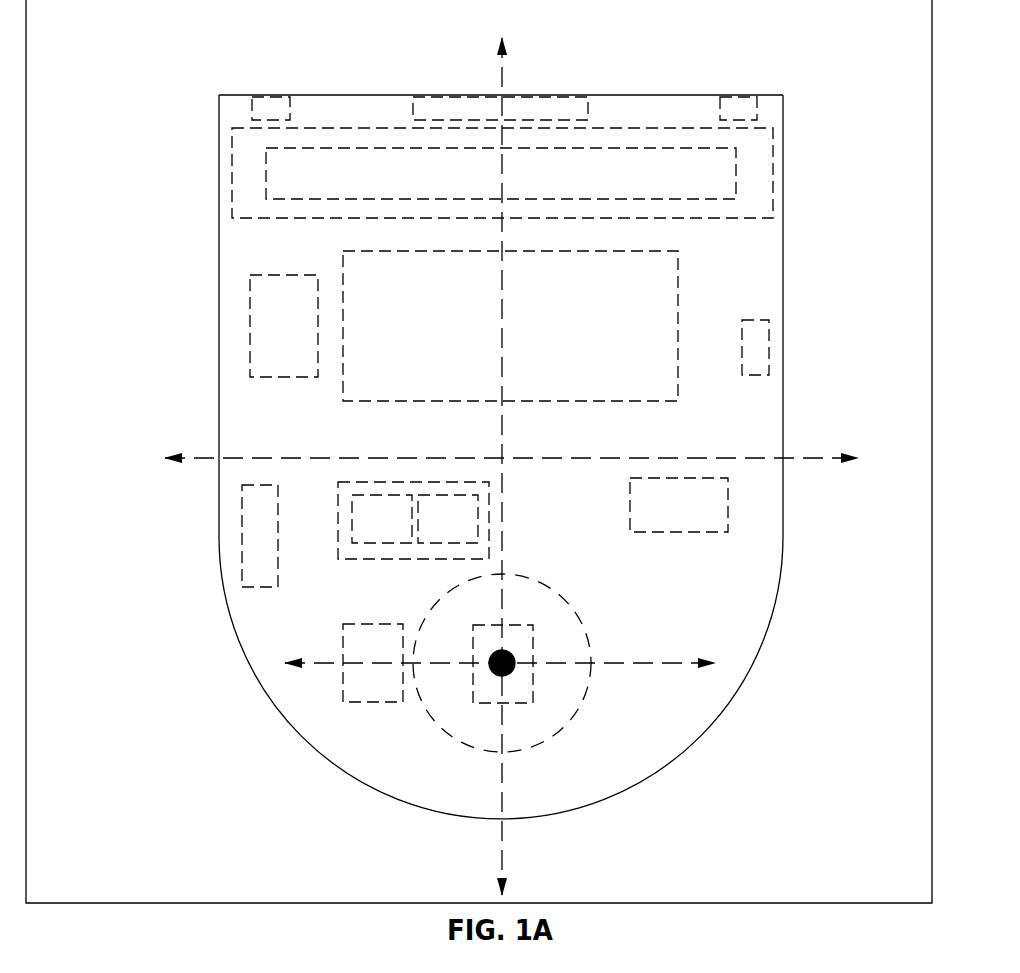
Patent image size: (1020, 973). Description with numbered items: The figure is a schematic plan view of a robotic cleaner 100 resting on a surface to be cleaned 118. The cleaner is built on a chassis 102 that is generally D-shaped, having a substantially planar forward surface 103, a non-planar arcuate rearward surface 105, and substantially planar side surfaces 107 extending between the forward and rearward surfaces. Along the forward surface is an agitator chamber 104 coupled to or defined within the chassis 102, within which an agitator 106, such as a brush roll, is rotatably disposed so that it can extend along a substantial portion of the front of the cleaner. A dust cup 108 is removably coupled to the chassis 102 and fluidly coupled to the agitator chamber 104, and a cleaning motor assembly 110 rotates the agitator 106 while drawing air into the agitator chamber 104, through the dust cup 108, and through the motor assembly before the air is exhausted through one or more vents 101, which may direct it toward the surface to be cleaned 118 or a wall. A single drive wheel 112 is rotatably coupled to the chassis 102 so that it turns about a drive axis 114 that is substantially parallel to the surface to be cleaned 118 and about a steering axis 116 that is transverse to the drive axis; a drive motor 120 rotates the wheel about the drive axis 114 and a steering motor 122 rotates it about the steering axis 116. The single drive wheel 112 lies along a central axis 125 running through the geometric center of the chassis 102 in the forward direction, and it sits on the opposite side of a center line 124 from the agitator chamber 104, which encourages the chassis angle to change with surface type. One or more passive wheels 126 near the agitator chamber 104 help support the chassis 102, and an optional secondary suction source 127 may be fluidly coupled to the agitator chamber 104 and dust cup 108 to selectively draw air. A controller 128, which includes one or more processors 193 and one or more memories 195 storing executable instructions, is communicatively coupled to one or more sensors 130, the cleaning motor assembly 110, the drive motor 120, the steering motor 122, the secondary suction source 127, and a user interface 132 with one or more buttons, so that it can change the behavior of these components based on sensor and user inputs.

The robotic cleaner 100 is at (131, 75).
The vents 101 is at (767, 350).
The chassis 102 is at (218, 337).
The forward surface 103 is at (686, 80).
The agitator chamber 104 is at (235, 203).
The rearward surface 105 is at (732, 705).
The agitator 106 is at (268, 187).
The side surfaces 107 is at (784, 280).
The dust cup 108 is at (678, 322).
The cleaning motor assembly 110 is at (272, 378).
The single drive wheel 112 is at (576, 612).
The drive axis 114 is at (630, 662).
The steering axis 116 is at (506, 655).
The surface to be cleaned 118 is at (185, 902).
The drive motor 120 is at (533, 689).
The steering motor 122 is at (368, 624).
The center line 124 is at (681, 458).
The central axis 125 is at (506, 513).
The passive wheels 126 is at (757, 108).
The secondary suction source 127 is at (702, 534).
The controller 128 is at (341, 542).
The sensors 130 is at (588, 118).
The user interface 132 is at (243, 545).
The processors 193 is at (365, 531).
The memories 195 is at (431, 531).